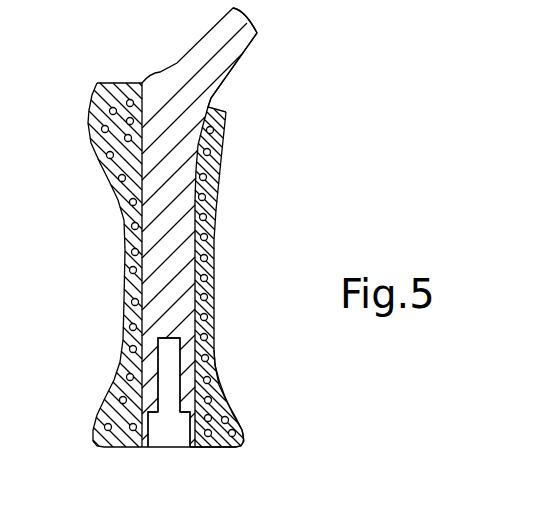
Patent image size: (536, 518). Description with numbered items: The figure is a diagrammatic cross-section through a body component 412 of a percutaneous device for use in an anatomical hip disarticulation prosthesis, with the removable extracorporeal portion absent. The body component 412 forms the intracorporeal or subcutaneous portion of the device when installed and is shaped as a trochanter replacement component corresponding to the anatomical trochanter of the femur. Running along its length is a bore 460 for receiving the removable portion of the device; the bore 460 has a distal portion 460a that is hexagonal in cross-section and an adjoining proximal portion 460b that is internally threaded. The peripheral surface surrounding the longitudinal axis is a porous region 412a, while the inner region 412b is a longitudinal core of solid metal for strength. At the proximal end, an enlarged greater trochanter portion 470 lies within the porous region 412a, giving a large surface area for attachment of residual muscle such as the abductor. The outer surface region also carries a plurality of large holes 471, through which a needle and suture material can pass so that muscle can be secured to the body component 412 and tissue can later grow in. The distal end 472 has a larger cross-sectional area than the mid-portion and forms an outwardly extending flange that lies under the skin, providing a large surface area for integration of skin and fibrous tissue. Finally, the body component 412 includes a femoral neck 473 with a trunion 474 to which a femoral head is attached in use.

The body component 412 is at (97, 213).
The porous region 412a is at (210, 327).
The inner region 412b is at (193, 227).
The bore 460 is at (170, 430).
The distal portion 460a is at (152, 437).
The proximal portion 460b is at (167, 391).
The greater trochanter portion 470 is at (92, 93).
The large holes 471 is at (205, 293).
The distal end 472 is at (243, 445).
The femoral neck 473 is at (252, 70).
The trunion 474 is at (238, 40).